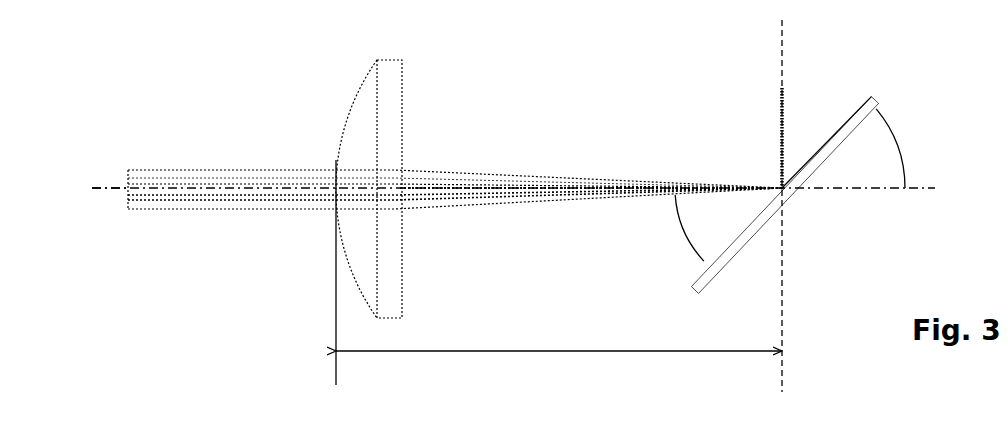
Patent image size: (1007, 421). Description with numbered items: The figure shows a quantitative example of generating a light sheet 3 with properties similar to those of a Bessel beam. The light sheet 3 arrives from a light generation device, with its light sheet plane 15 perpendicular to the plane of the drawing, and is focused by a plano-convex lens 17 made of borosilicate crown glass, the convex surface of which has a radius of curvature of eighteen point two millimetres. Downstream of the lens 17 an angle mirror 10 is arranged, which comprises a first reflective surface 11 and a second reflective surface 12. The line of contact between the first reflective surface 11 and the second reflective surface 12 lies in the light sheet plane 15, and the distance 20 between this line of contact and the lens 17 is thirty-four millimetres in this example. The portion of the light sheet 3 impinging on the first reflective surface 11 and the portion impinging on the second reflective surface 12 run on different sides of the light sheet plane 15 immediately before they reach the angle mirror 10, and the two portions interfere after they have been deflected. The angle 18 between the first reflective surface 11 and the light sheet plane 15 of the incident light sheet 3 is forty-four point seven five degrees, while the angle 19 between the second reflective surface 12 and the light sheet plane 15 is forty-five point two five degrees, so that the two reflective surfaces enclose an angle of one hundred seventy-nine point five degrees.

The light sheet 3 is at (204, 182).
The light sheet plane 15 is at (106, 190).
The plano-convex lens 17 is at (327, 100).
The second reflective surface 12 is at (855, 118).
The angle between the first reflective surface and the light sheet plane 18 is at (702, 228).
The angle between the second reflective surface and the light sheet plane 19 is at (877, 148).
The first reflective surface 11 is at (728, 243).
The angle mirror 10 is at (823, 218).
The distance 20 is at (508, 352).